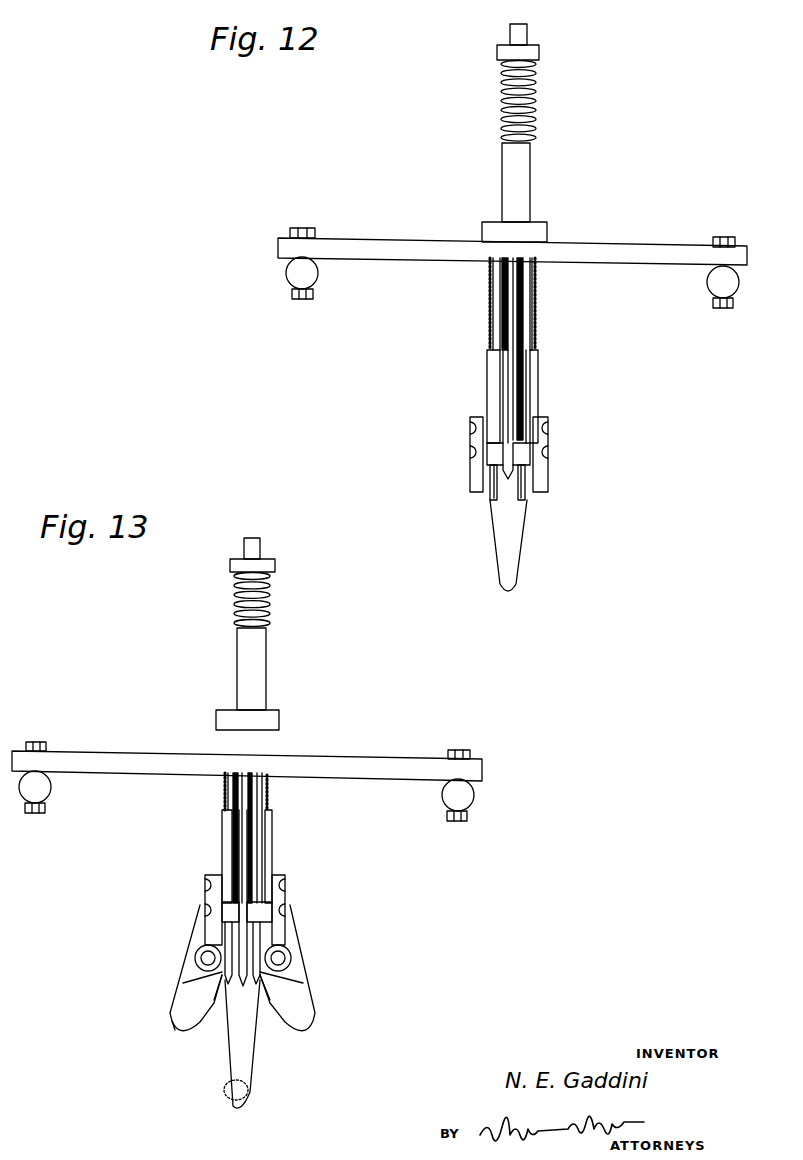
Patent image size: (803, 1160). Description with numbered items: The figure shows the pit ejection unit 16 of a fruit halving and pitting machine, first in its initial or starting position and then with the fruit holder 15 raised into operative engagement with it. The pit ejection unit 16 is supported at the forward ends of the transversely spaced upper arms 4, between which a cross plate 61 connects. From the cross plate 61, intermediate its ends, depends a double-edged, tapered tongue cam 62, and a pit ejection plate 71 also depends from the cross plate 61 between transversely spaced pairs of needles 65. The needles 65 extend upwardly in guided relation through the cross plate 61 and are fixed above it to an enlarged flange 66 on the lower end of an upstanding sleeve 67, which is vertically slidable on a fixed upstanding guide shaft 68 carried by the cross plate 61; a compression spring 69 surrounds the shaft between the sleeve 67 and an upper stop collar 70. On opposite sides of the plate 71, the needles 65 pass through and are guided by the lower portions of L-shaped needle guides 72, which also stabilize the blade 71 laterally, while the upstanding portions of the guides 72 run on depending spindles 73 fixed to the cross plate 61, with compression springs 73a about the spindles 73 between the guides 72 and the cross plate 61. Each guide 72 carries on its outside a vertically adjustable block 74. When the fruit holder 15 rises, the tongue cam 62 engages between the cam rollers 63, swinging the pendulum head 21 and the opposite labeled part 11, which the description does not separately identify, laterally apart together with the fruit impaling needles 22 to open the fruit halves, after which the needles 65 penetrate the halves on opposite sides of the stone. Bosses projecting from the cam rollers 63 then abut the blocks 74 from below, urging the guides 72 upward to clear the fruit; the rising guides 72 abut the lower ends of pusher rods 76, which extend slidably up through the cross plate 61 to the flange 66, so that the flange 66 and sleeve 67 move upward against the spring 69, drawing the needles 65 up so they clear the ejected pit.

In FIG. 12, the upper arms 4 is at (300, 272).
In FIG. 13, the upper arms 4 is at (36, 790).
In FIG. 13, the right jaw 11 is at (298, 1019).
In FIG. 13, the fruit holder 15 is at (188, 1042).
In FIG. 12, the pit ejection unit 16 is at (542, 400).
In FIG. 13, the pit ejection unit 16 is at (297, 888).
In FIG. 13, the pendulum head 21 is at (180, 1009).
In FIG. 13, the fruit impaling needles 22 is at (213, 985).
In FIG. 12, the cross plate 61 is at (367, 243).
In FIG. 13, the cross plate 61 is at (378, 758).
In FIG. 12, the tongue cam 62 is at (513, 552).
In FIG. 13, the tongue cam 62 is at (251, 1062).
In FIG. 13, the cam rollers 63 is at (196, 952).
In FIG. 12, the needles 65 is at (520, 495).
In FIG. 13, the needles 65 is at (233, 856).
In FIG. 12, the flange 66 is at (546, 230).
In FIG. 13, the flange 66 is at (272, 712).
In FIG. 12, the sleeve 67 is at (529, 190).
In FIG. 13, the sleeve 67 is at (246, 657).
In FIG. 12, the guide shaft 68 is at (524, 30).
In FIG. 13, the guide shaft 68 is at (258, 545).
In FIG. 12, the compression spring 69 is at (500, 97).
In FIG. 13, the compression spring 69 is at (272, 607).
In FIG. 12, the stop collar 70 is at (541, 52).
In FIG. 13, the stop collar 70 is at (277, 564).
In FIG. 12, the pit ejection plate 71 is at (515, 380).
In FIG. 13, the pit ejection plate 71 is at (284, 935).
In FIG. 12, the L-shaped needle guides 72 is at (493, 455).
In FIG. 13, the L-shaped needle guides 72 is at (275, 826).
In FIG. 12, the spindles 73 is at (490, 326).
In FIG. 12, the compression springs 73a is at (490, 302).
In FIG. 13, the compression springs 73a is at (226, 784).
In FIG. 12, the vertically adjustable block 74 is at (478, 478).
In FIG. 13, the vertically adjustable block 74 is at (203, 905).
In FIG. 12, the pusher rods 76 is at (522, 318).
In FIG. 13, the pusher rods 76 is at (255, 806).